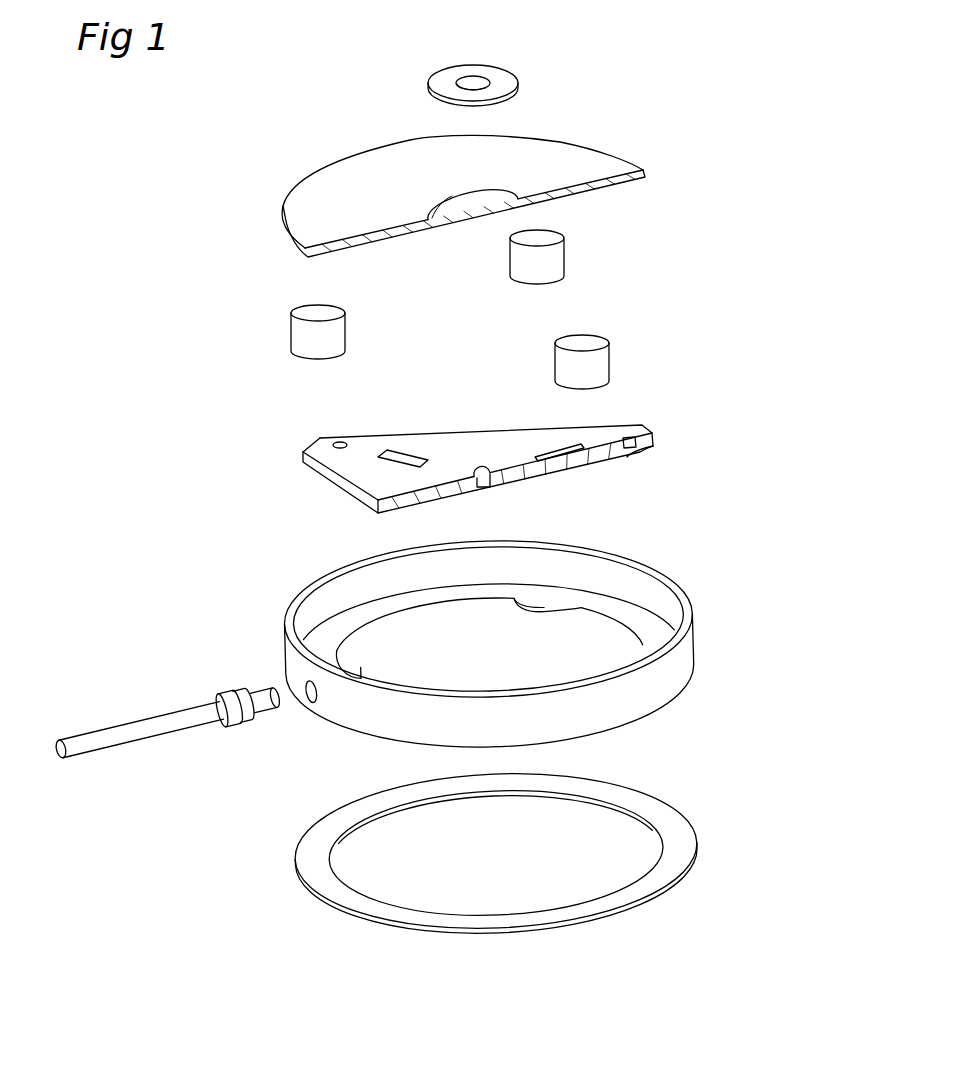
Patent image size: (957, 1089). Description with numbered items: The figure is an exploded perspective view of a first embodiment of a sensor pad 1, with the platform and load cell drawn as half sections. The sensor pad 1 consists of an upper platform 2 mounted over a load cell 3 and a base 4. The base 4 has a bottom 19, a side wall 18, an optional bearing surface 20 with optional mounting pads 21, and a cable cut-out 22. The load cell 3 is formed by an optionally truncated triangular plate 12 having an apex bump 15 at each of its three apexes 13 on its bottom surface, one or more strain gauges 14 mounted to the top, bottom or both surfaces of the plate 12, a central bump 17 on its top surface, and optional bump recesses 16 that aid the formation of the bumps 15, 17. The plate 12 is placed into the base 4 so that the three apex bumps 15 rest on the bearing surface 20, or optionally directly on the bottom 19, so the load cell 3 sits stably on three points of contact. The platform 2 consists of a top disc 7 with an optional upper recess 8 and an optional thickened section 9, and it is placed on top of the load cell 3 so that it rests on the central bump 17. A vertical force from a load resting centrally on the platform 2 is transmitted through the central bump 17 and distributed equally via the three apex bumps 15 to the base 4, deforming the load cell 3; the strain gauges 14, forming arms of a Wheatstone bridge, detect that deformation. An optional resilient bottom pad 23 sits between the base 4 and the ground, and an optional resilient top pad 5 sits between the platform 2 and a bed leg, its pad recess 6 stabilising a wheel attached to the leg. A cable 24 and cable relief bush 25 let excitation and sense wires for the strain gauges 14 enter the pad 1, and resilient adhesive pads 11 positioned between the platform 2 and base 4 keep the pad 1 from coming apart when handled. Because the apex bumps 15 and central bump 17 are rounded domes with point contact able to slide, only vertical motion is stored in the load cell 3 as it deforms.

The sensor pad 1 is at (770, 82).
The upper platform 2 is at (610, 130).
The load cell 3 is at (625, 408).
The base 4 is at (685, 567).
The resilient top pad 5 is at (513, 67).
The pad recess 6 is at (467, 83).
The top disc 7 is at (337, 182).
The upper recess 8 is at (453, 203).
The thickened section 9 is at (452, 232).
The resilient adhesive pads 11 is at (553, 267).
The triangular plate 12 is at (362, 475).
The apexes 13 is at (313, 443).
The strain gauges 14 is at (397, 460).
The apex bump 15 is at (632, 457).
The bump recesses 16 is at (337, 440).
The central bump 17 is at (482, 467).
The side wall 18 is at (663, 603).
The bottom 19 is at (580, 663).
The bearing surface 20 is at (345, 627).
The mounting pads 21 is at (537, 600).
The cable cut-out 22 is at (303, 700).
The resilient bottom pad 23 is at (307, 863).
The cable 24 is at (123, 728).
The cable relief bush 25 is at (228, 693).